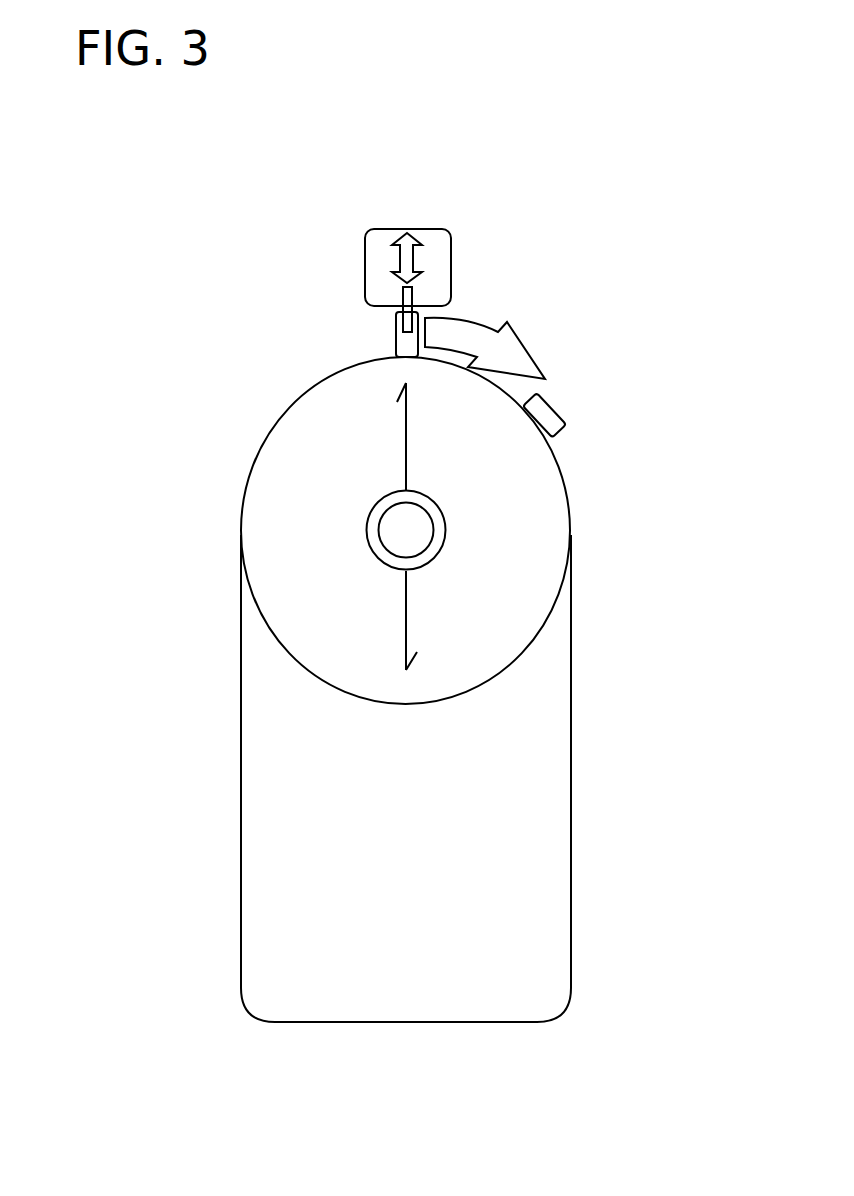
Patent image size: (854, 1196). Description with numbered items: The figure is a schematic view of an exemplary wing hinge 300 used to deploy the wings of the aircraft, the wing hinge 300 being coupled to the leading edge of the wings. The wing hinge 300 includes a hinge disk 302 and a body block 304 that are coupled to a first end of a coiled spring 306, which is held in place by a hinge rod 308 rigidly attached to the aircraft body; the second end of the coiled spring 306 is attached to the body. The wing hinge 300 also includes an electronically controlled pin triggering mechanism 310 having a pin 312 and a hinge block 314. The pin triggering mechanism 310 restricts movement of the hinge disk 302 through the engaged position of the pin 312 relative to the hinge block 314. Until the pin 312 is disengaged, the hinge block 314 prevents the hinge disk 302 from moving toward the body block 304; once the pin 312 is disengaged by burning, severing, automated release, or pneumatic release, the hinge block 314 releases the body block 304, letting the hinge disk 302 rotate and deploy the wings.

The wing hinge 300 is at (588, 212).
The hinge disk 302 is at (300, 518).
The body block 304 is at (558, 432).
The coiled spring 306 is at (405, 441).
The hinge rod 308 is at (400, 543).
The pin triggering mechanism 310 is at (365, 257).
The pin 312 is at (403, 298).
The hinge block 314 is at (396, 335).